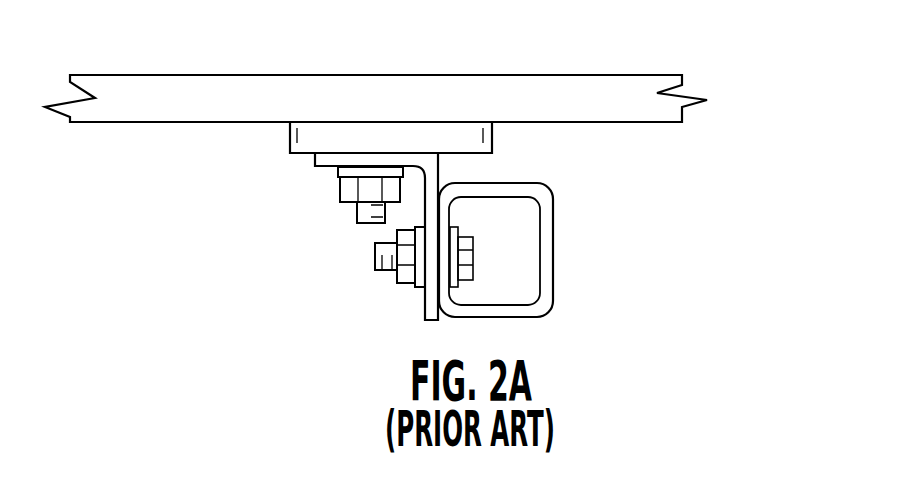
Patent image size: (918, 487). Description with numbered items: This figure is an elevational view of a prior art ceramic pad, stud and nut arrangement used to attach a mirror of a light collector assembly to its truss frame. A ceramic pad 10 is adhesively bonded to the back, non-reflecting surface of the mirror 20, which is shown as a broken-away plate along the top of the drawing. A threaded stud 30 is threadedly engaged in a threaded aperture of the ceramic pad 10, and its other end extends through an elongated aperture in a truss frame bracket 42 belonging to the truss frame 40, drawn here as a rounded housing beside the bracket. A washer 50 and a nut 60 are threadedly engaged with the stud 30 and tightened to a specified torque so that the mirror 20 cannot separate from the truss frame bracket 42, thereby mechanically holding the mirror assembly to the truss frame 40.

The mirror 20 is at (623, 75).
The ceramic pad 10 is at (493, 146).
The truss frame bracket 42 is at (442, 181).
The washer 50 is at (337, 174).
The nut 60 is at (340, 188).
The threaded stud 30 is at (353, 215).
The truss frame 40 is at (555, 260).